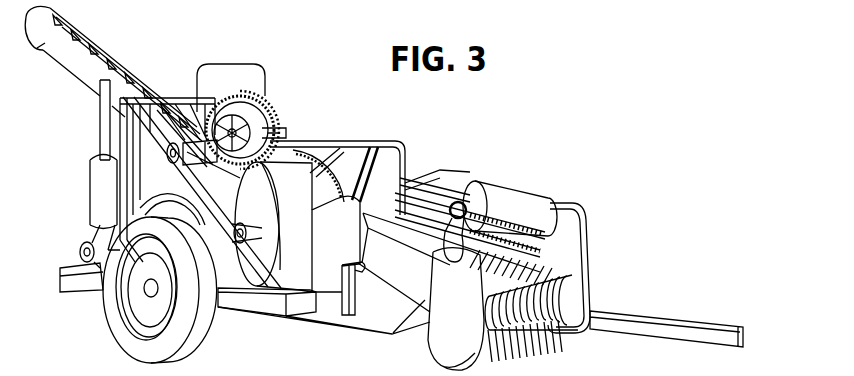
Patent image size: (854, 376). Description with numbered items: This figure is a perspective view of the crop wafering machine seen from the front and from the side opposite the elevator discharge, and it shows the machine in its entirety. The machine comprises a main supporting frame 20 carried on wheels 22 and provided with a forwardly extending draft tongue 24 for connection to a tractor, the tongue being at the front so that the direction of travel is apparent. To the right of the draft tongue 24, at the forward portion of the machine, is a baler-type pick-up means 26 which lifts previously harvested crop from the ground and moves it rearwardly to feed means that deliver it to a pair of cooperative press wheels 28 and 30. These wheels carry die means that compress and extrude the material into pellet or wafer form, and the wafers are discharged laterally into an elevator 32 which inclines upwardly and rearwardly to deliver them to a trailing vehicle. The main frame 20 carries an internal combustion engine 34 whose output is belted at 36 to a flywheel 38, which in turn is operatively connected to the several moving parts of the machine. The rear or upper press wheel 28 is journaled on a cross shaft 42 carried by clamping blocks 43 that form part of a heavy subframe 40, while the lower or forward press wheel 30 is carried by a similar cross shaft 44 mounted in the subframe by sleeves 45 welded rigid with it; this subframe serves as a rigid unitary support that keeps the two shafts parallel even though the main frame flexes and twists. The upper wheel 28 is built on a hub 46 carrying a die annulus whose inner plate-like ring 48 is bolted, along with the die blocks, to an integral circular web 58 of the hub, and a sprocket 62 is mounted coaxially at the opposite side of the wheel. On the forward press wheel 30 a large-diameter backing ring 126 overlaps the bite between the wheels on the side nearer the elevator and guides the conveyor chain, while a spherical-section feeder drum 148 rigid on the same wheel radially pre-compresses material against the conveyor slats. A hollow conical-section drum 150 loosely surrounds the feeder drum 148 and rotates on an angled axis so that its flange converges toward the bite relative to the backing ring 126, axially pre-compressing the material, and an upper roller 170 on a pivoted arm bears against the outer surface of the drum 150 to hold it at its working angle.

The main supporting frame 20 is at (70, 284).
The wheels 22 is at (132, 344).
The draft tongue 24 is at (705, 330).
The pick-up means 26 is at (587, 263).
The rear or upper press wheel 28 is at (283, 123).
The lower or forward press wheel 30 is at (337, 180).
The elevator 32 is at (115, 63).
The internal combustion engine 34 is at (92, 182).
The belt 36 is at (88, 234).
The flywheel 38 is at (143, 217).
The subframe 40 is at (213, 210).
The cross shaft 42 is at (170, 158).
The clamping blocks 43 is at (197, 121).
The cross shaft 44 is at (248, 238).
The sleeves 45 is at (260, 224).
The hub 46 is at (225, 100).
The inner plate-like ring 48 is at (263, 113).
The circular web 58 is at (268, 116).
The sprocket 62 is at (287, 132).
The backing ring 126 is at (358, 146).
The feeder drum 148 is at (313, 168).
The drum 150 is at (292, 233).
The upper roller 170 is at (273, 227).